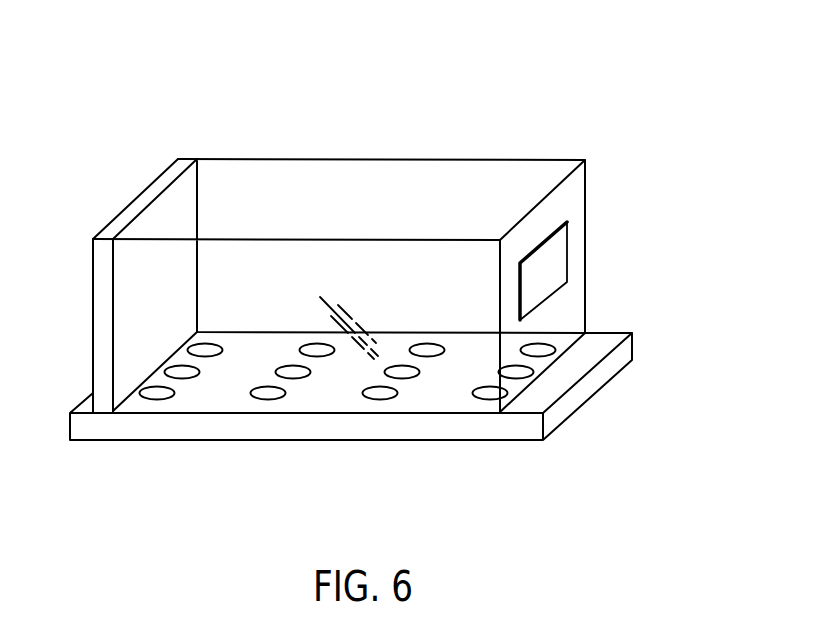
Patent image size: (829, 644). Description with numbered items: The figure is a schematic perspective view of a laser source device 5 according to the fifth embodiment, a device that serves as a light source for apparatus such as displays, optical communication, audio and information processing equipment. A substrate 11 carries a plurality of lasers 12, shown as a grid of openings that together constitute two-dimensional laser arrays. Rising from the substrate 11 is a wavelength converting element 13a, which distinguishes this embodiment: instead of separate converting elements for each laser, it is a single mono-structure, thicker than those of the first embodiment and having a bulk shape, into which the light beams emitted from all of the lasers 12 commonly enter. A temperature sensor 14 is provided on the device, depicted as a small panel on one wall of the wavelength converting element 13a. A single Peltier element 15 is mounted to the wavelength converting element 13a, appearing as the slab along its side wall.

The laser source device 5 is at (380, 121).
The substrate 11 is at (558, 413).
The lasers 12 is at (152, 391).
The wavelength converting element 13a is at (170, 210).
The temperature sensor 14 is at (548, 260).
The Peltier element 15 is at (100, 317).